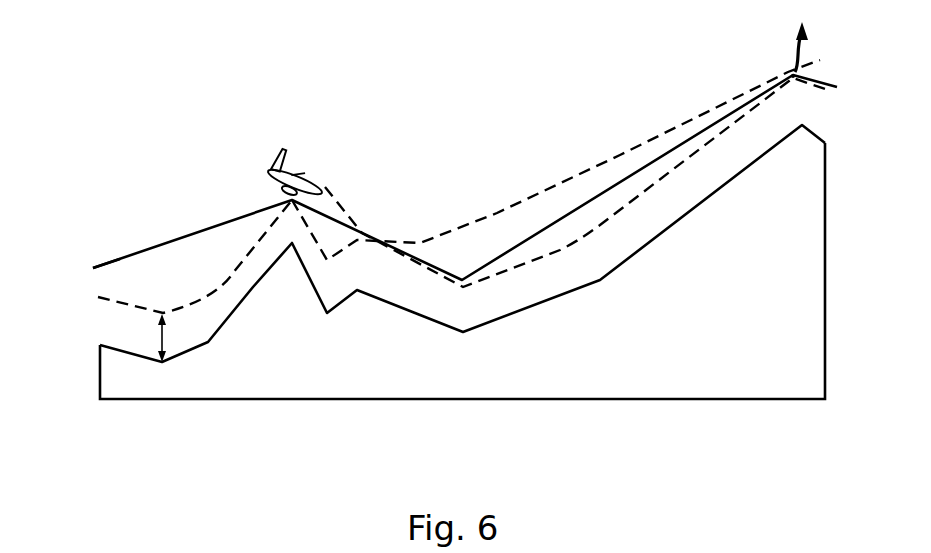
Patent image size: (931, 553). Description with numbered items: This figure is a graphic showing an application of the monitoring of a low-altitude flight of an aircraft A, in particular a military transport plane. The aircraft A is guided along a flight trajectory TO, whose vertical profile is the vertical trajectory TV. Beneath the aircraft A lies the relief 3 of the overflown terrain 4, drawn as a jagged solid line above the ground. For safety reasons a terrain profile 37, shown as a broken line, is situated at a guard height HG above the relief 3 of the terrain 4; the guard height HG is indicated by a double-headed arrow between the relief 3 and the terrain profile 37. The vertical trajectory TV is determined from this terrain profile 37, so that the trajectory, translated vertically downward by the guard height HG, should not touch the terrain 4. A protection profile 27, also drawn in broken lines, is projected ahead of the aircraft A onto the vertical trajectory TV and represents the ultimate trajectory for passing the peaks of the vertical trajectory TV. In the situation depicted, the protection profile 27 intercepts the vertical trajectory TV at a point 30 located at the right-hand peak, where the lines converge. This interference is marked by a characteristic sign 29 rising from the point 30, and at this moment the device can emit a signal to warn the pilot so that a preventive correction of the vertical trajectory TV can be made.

The relief 3 is at (247, 281).
The terrain 4 is at (597, 370).
The protection profile 27 is at (530, 186).
The characteristic sign 29 is at (800, 42).
The point 30 is at (802, 95).
The terrain profile 37 is at (118, 302).
The aircraft A is at (298, 182).
The vertical trajectory TV is at (163, 243).
The flight trajectory TO is at (99, 249).
The guard height HG is at (182, 338).